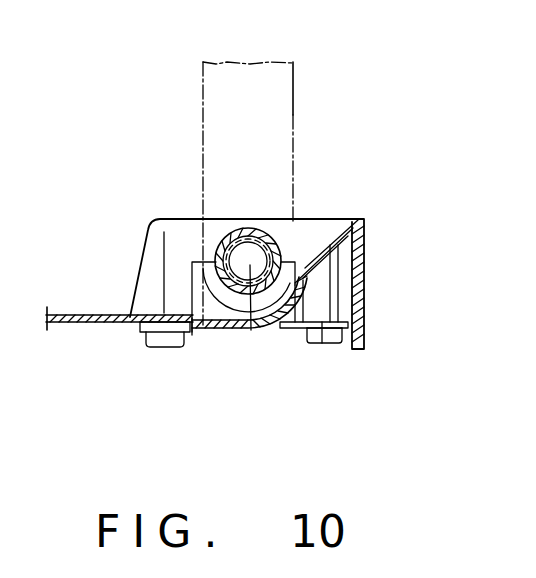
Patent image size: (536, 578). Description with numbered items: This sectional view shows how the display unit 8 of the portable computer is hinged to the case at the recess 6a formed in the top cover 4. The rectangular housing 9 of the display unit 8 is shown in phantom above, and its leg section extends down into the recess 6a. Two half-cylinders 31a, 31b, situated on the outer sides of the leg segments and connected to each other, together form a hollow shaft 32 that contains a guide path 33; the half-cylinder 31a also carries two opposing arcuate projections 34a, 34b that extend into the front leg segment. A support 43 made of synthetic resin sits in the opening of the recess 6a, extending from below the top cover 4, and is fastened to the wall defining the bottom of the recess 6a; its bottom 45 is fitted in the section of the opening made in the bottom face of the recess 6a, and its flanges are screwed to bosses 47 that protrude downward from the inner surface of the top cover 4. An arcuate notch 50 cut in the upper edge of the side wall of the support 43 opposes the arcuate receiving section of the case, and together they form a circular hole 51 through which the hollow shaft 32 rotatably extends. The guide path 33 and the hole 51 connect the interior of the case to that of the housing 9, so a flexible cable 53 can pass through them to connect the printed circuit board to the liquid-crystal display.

The top cover 4 is at (53, 326).
The recess 6a is at (165, 232).
The display unit 8 is at (293, 116).
The housing 9 is at (203, 97).
The half-cylinder 31a is at (200, 254).
The half-cylinder 31b is at (310, 238).
The hollow shaft 32 is at (228, 330).
The guide path 33 is at (251, 330).
The arcuate projection 34a is at (277, 234).
The arcuate projection 34b is at (300, 297).
The support 43 is at (297, 333).
The bottom 45 is at (213, 335).
The boss 47 is at (333, 282).
The arcuate notch 50 is at (263, 300).
The circular hole 51 is at (255, 228).
The cable 53 is at (240, 242).